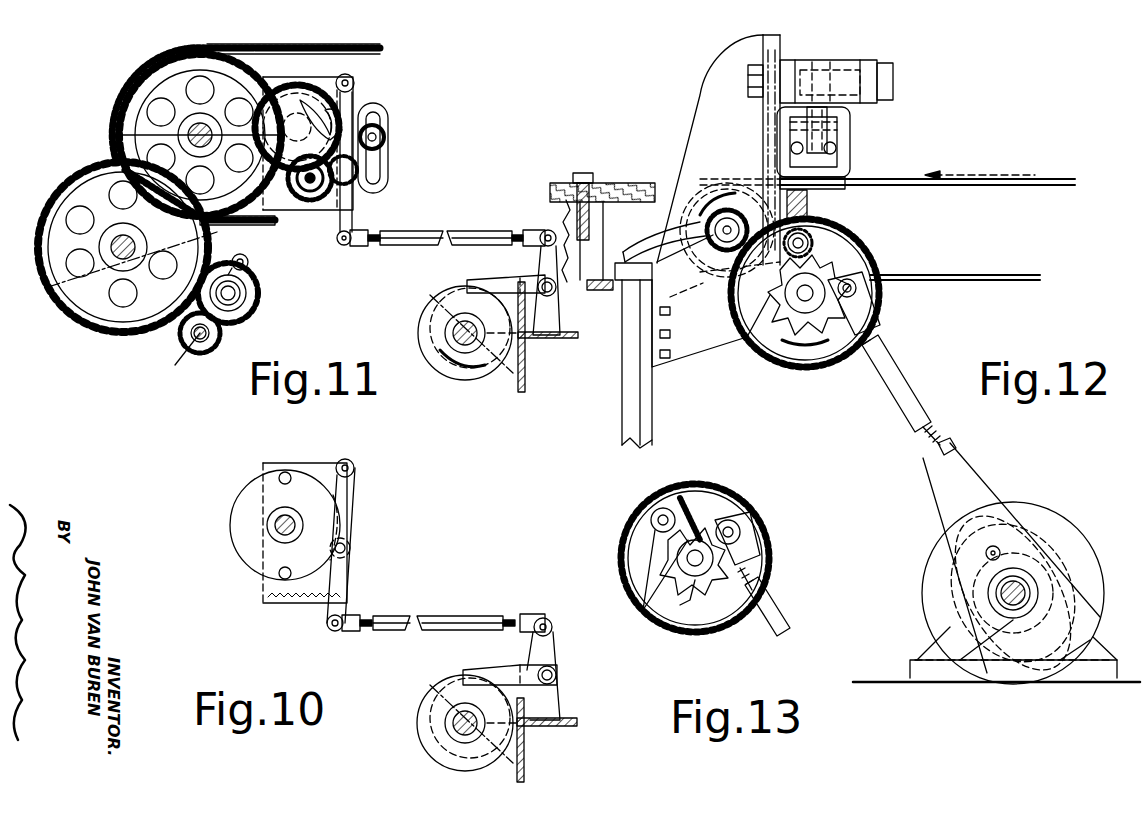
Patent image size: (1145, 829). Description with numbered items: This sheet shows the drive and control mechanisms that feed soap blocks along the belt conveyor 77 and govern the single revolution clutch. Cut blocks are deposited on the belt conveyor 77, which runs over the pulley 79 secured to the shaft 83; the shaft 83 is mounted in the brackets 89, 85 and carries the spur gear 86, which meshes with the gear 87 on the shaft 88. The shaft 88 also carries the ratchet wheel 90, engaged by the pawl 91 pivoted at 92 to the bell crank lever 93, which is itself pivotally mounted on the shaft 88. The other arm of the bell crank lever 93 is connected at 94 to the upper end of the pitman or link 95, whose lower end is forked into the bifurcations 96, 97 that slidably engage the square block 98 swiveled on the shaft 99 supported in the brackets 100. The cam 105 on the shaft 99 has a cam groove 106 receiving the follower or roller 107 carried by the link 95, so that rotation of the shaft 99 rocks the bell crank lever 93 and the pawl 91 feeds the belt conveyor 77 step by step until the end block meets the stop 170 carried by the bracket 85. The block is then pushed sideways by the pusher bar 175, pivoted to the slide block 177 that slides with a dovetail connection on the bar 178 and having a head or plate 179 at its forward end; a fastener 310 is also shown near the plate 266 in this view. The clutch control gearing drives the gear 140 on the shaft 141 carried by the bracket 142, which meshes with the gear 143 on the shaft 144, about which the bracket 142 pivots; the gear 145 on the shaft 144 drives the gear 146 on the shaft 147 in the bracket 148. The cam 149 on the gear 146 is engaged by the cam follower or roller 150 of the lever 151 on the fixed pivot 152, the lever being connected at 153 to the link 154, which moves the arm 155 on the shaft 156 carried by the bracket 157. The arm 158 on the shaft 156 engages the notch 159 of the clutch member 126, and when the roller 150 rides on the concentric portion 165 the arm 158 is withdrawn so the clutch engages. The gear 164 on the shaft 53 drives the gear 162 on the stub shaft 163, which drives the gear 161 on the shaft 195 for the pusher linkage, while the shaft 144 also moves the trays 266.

In FIG. 11, the shaft 53 is at (98, 265).
In FIG. 12, the belt conveyor 77 is at (1030, 187).
In FIG. 12, the pulley 79 is at (685, 200).
In FIG. 12, the shaft 83 is at (725, 272).
In FIG. 12, the bracket 85 is at (665, 235).
In FIG. 12, the spur gear 86 is at (700, 192).
In FIG. 12, the gear 87 is at (872, 262).
In FIG. 13, the gear 87 is at (740, 505).
In FIG. 12, the shaft 88 is at (830, 365).
In FIG. 13, the shaft 88 is at (680, 605).
In FIG. 12, the bracket 89 is at (672, 360).
In FIG. 12, the ratchet wheel 90 is at (775, 308).
In FIG. 13, the ratchet wheel 90 is at (660, 565).
In FIG. 12, the pawl 91 is at (810, 245).
In FIG. 13, the pawl 91 is at (695, 490).
In FIG. 12, the pivot 92 is at (815, 232).
In FIG. 13, the pivot 92 is at (652, 512).
In FIG. 12, the bell crank lever 93 is at (845, 345).
In FIG. 13, the bell crank lever 93 is at (645, 608).
In FIG. 12, the connection 94 is at (860, 292).
In FIG. 13, the connection 94 is at (742, 530).
In FIG. 12, the pitman or link 95 is at (892, 362).
In FIG. 13, the pitman or link 95 is at (770, 600).
In FIG. 12, the bifurcation 96 is at (1030, 668).
In FIG. 12, the bifurcation 97 is at (1060, 665).
In FIG. 12, the square block 98 is at (1010, 640).
In FIG. 12, the shaft 99 is at (1030, 592).
In FIG. 12, the bracket 100 is at (930, 652).
In FIG. 12, the cam 105 is at (1103, 598).
In FIG. 12, the cam groove 106 is at (955, 593).
In FIG. 12, the follower or roller 107 is at (1000, 550).
In FIG. 11, the clutch member 126 is at (478, 378).
In FIG. 10, the clutch member 126 is at (440, 760).
In FIG. 11, the gear 140 is at (338, 220).
In FIG. 11, the shaft 141 is at (255, 225).
In FIG. 11, the bracket 142 is at (345, 184).
In FIG. 11, the gear 143 is at (258, 50).
In FIG. 11, the shaft 144 is at (190, 110).
In FIG. 11, the gear 145 is at (125, 134).
In FIG. 11, the gear 146 is at (362, 108).
In FIG. 11, the shaft 147 is at (325, 85).
In FIG. 10, the shaft 147 is at (268, 520).
In FIG. 11, the bracket 148 is at (320, 108).
In FIG. 10, the bracket 148 is at (333, 466).
In FIG. 11, the cam 149 is at (356, 82).
In FIG. 10, the cam 149 is at (238, 545).
In FIG. 11, the cam follower or roller 150 is at (378, 150).
In FIG. 10, the cam follower or roller 150 is at (348, 550).
In FIG. 11, the lever 151 is at (354, 225).
In FIG. 10, the lever 151 is at (354, 502).
In FIG. 10, the fixed pivot 152 is at (356, 468).
In FIG. 11, the connection 153 is at (340, 243).
In FIG. 10, the connection 153 is at (345, 618).
In FIG. 11, the link 154 is at (460, 247).
In FIG. 10, the link 154 is at (478, 615).
In FIG. 11, the arm 155 is at (545, 258).
In FIG. 10, the arm 155 is at (553, 636).
In FIG. 11, the shaft 156 is at (560, 300).
In FIG. 10, the shaft 156 is at (558, 680).
In FIG. 11, the bracket 157 is at (578, 340).
In FIG. 10, the bracket 157 is at (548, 728).
In FIG. 11, the arm 158 is at (465, 282).
In FIG. 10, the arm 158 is at (500, 667).
In FIG. 11, the notch 159 is at (425, 333).
In FIG. 10, the notch 159 is at (455, 680).
In FIG. 11, the gear 161 is at (203, 352).
In FIG. 11, the gear 162 is at (250, 298).
In FIG. 11, the stub shaft 163 is at (246, 290).
In FIG. 11, the gear 164 is at (125, 332).
In FIG. 10, the concentric portion 165 is at (255, 575).
In FIG. 12, the stop 170 is at (775, 135).
In FIG. 12, the pusher bar 175 is at (845, 64).
In FIG. 12, the slide block 177 is at (845, 140).
In FIG. 12, the bar 178 is at (810, 200).
In FIG. 12, the head or plate 179 is at (850, 140).
In FIG. 11, the shaft 195 is at (180, 350).
In FIG. 12, the traveling support or tray 266 is at (570, 185).
In FIG. 12, the bolt 310 is at (590, 175).